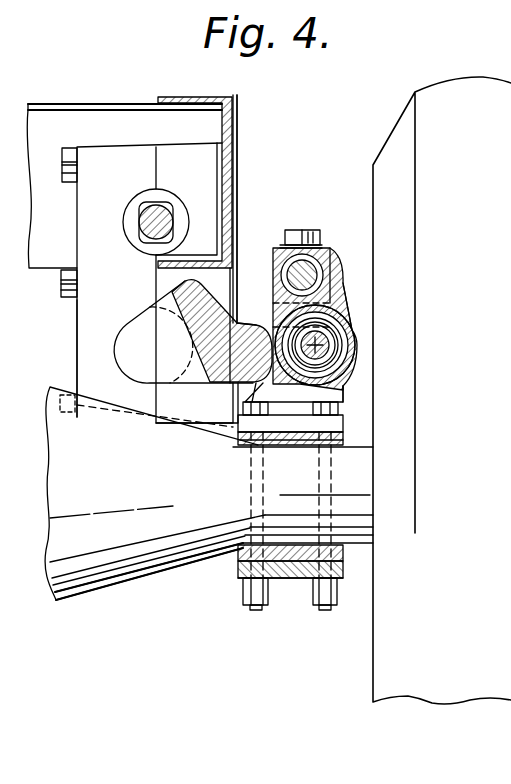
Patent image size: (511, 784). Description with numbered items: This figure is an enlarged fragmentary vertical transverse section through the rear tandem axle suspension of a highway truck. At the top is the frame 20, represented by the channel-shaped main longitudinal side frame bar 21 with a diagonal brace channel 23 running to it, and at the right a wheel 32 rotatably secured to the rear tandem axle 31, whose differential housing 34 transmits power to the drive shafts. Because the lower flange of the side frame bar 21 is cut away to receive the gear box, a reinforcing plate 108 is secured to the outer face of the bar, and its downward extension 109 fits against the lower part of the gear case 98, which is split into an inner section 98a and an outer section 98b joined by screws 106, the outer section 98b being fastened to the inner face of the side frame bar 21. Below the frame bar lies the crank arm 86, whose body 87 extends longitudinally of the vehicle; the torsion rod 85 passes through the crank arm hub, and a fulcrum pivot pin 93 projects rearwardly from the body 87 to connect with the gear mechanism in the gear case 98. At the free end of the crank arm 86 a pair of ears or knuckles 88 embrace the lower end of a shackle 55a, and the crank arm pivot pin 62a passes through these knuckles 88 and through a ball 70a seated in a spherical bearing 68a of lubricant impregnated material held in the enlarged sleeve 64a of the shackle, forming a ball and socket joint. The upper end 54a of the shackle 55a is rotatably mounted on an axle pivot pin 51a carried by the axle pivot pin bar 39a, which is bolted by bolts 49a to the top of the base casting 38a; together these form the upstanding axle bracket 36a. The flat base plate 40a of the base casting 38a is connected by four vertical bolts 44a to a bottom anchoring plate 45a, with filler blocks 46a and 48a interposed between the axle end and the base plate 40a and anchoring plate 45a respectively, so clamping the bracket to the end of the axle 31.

The frame 20 is at (43, 97).
The diagonal brace channel 23 is at (70, 103).
The main longitudinal side frame bar 21 is at (165, 96).
The reinforcing plate 108 is at (238, 121).
The screws 106 is at (64, 152).
The gear case 98 is at (148, 150).
The inner section 98a is at (84, 332).
The outer section 98b is at (194, 148).
The torsion rod 85 is at (145, 225).
The crank arm 86 is at (143, 318).
The body 87 is at (198, 340).
The fulcrum pivot pin 93 is at (190, 364).
The ears or knuckles 88 is at (266, 323).
The downward extension 109 is at (234, 406).
The differential housing 34 is at (155, 493).
The rear tandem axle 31 is at (356, 511).
The flat base plate 40a is at (298, 430).
The axle bracket 36a is at (351, 429).
The filler block 46a is at (340, 440).
The base casting 38a is at (340, 396).
The axle pivot pin bar 39a is at (326, 246).
The axle pivot pin 51a is at (327, 267).
The shackle end 54a is at (276, 247).
The bolts 49a is at (304, 229).
The shackle 55a is at (356, 289).
The enlarged sleeve 64a is at (346, 324).
The spherical bearing 68a is at (341, 335).
The ball 70a is at (324, 345).
The crank arm pivot pin 62a is at (350, 352).
The filler block 48a is at (242, 566).
The bottom anchoring plate 45a is at (298, 583).
The vertical bolts 44a is at (330, 610).
The wheel 32 is at (442, 390).